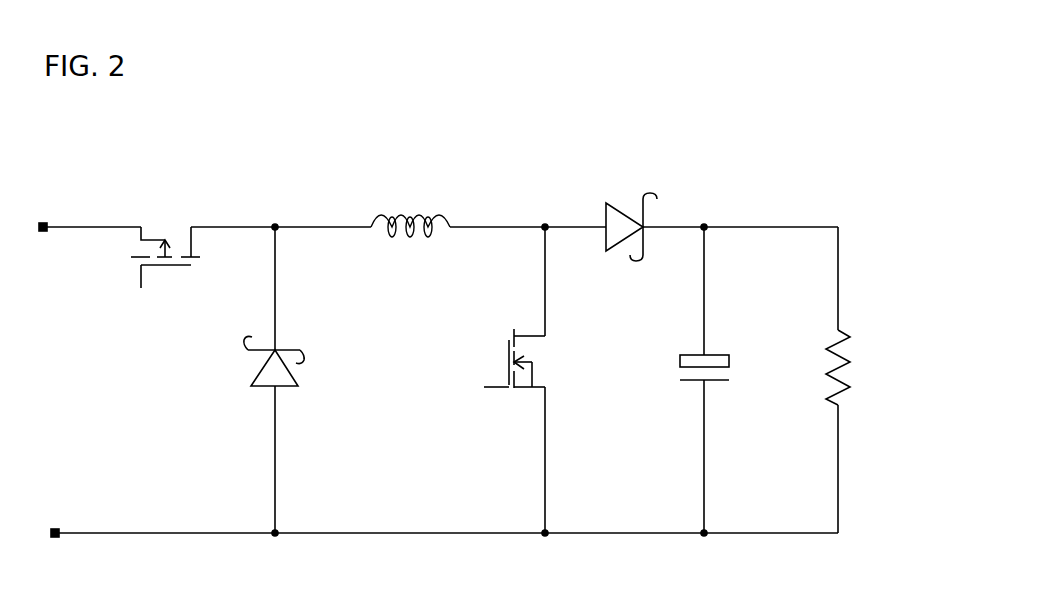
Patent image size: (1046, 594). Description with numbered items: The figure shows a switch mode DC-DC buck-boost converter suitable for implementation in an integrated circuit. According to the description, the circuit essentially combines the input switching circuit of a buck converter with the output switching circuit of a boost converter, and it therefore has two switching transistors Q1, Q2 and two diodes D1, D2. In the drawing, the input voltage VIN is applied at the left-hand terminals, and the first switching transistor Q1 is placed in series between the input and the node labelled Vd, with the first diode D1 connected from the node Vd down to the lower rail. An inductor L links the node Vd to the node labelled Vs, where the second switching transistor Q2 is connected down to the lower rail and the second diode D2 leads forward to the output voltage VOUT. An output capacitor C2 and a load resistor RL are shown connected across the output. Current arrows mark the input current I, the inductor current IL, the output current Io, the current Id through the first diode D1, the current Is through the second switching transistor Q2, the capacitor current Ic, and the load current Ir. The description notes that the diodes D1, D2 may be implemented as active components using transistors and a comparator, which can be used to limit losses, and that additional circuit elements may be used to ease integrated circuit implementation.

The switching transistor Q1 is at (167, 268).
The switching transistor Q2 is at (502, 358).
The diode D1 is at (253, 366).
The diode D2 is at (631, 251).
The inductor L is at (410, 242).
The output capacitor C2 is at (682, 377).
The load resistor RL is at (824, 367).
The input voltage VIN is at (54, 268).
The output voltage VOUT is at (817, 202).
The node voltage Vd is at (301, 255).
The node voltage Vs is at (569, 255).
The input current I is at (55, 178).
The inductor current IL is at (448, 178).
The output current Io is at (668, 178).
The diode D1 current Id is at (325, 400).
The switch Q2 current Is is at (583, 400).
The capacitor current Ic is at (754, 400).
The load current Ir is at (876, 400).